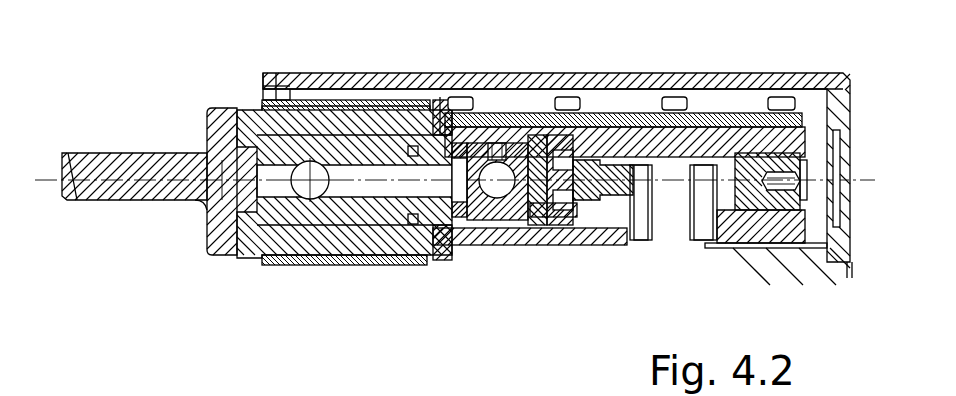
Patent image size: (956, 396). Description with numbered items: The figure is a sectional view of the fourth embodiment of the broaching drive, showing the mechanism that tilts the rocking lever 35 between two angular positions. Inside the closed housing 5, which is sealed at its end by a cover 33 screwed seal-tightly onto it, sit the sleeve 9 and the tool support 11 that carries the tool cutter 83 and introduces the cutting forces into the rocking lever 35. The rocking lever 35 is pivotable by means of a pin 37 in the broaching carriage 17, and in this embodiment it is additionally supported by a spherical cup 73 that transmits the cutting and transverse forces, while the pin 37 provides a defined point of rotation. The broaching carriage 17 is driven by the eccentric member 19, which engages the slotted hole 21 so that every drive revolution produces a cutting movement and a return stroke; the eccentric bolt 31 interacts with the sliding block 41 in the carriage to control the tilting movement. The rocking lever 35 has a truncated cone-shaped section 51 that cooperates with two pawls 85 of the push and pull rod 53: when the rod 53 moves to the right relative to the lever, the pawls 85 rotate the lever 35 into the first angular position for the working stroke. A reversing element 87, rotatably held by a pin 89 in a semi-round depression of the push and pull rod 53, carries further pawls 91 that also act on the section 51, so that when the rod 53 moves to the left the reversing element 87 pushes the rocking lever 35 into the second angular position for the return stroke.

The housing 5 is at (838, 117).
The sleeve 9 is at (347, 258).
The tool support 11 is at (113, 153).
The broaching carriage 17 is at (340, 112).
The eccentric member 19 is at (707, 222).
The slotted hole 21 is at (721, 246).
The eccentric bolt 31 is at (703, 130).
The cover 33 is at (785, 82).
The rocking lever 35 is at (256, 257).
The pin 37 is at (300, 188).
The sliding block 41 is at (733, 150).
The truncated cone-shaped section 51 is at (430, 224).
The push and pull rod 53 is at (567, 145).
The spherical cup 73 is at (268, 108).
The tool cutter 83 is at (63, 153).
The pawls 85 is at (418, 224).
The reversing element 87 is at (536, 145).
The pin 89 is at (478, 145).
The pawls 91 is at (430, 112).